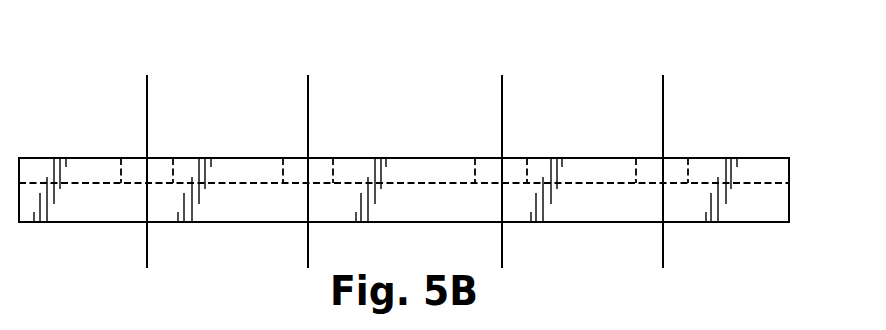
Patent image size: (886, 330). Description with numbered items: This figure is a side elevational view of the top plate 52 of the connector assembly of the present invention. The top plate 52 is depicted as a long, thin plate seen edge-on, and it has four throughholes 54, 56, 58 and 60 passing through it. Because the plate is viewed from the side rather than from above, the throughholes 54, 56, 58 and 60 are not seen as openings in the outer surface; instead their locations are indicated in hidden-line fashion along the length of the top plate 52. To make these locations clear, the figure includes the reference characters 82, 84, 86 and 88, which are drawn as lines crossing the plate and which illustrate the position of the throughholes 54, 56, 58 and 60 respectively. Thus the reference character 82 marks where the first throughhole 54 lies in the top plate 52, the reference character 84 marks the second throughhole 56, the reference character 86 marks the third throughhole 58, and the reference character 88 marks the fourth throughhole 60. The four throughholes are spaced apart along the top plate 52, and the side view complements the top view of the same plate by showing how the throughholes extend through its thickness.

The top plate 52 is at (789, 200).
The throughhole 54 is at (130, 158).
The throughhole 56 is at (295, 158).
The throughhole 58 is at (485, 158).
The throughhole 60 is at (645, 158).
The reference character 82 is at (148, 98).
The reference character 84 is at (309, 99).
The reference character 86 is at (503, 99).
The reference character 88 is at (664, 99).